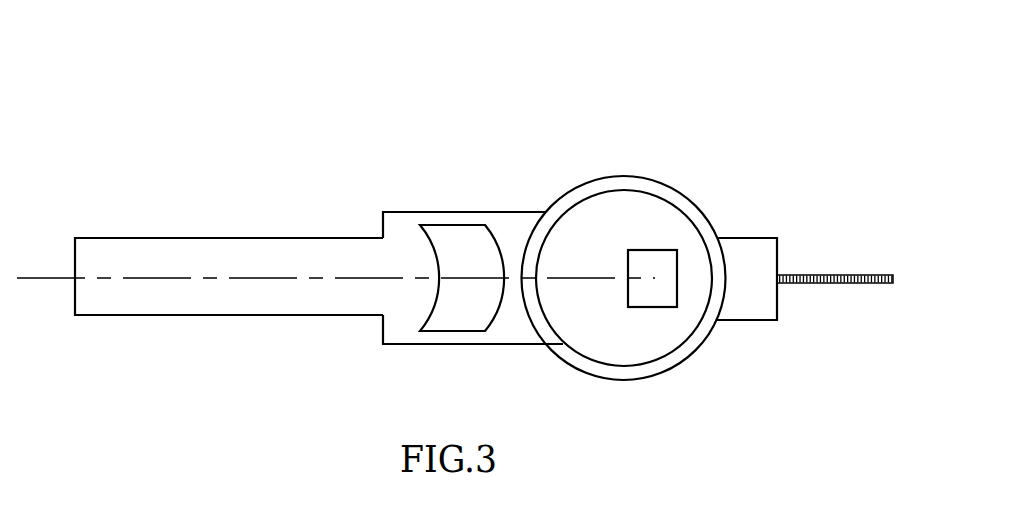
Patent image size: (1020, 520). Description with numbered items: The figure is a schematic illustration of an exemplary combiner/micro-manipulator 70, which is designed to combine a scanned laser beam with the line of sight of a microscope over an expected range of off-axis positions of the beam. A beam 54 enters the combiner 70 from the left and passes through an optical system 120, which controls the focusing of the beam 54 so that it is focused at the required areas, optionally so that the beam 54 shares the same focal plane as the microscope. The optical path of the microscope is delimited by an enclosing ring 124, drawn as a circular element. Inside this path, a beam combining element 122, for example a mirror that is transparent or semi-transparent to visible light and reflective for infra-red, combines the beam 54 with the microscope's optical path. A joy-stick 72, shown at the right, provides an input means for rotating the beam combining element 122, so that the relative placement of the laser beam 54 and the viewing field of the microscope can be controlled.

The combiner/micro-manipulator 70 is at (228, 113).
The beam 54 is at (44, 279).
The optical system 120 is at (455, 225).
The enclosing ring 124 is at (623, 177).
The beam combining element 122 is at (656, 250).
The joy-stick 72 is at (838, 287).